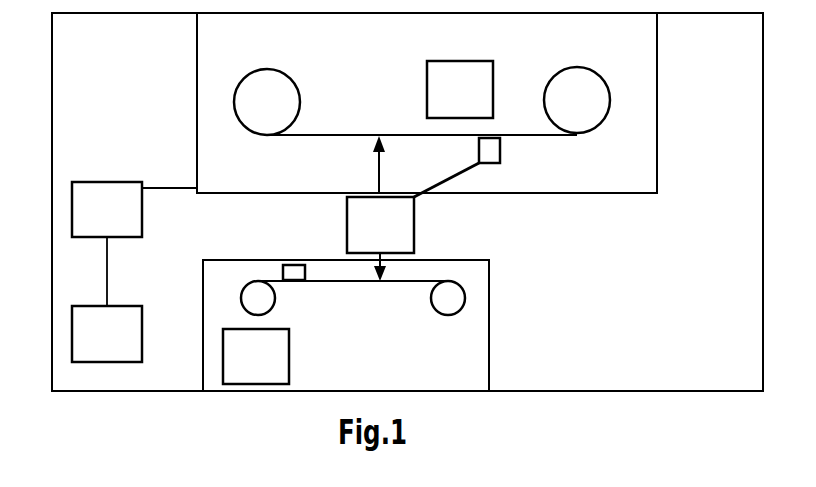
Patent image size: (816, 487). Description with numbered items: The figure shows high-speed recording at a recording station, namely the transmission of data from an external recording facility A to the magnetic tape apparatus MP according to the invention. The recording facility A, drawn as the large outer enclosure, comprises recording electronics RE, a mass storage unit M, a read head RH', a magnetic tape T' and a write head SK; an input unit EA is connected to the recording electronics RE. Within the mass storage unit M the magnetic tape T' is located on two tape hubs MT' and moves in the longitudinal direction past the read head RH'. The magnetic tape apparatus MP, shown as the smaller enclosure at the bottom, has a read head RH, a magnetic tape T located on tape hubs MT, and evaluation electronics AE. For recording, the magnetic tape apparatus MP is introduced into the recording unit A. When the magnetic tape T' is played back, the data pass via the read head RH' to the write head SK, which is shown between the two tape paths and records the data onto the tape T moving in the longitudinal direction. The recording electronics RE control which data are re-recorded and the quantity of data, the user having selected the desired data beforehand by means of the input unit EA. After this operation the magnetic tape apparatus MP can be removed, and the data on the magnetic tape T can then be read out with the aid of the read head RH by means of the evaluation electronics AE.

The recording facility A is at (407, 202).
The mass storage unit M is at (427, 103).
The tape hubs MT' is at (422, 101).
The read head RH' is at (483, 129).
The magnetic tape T' is at (420, 154).
The write head SK is at (380, 225).
The recording electronics RE is at (134, 209).
The input unit EA is at (107, 299).
The magnetic tape apparatus MP is at (346, 325).
The evaluation electronics AE is at (256, 356).
The tape hubs MT is at (353, 302).
The magnetic tape T is at (379, 246).
The read head RH is at (283, 246).